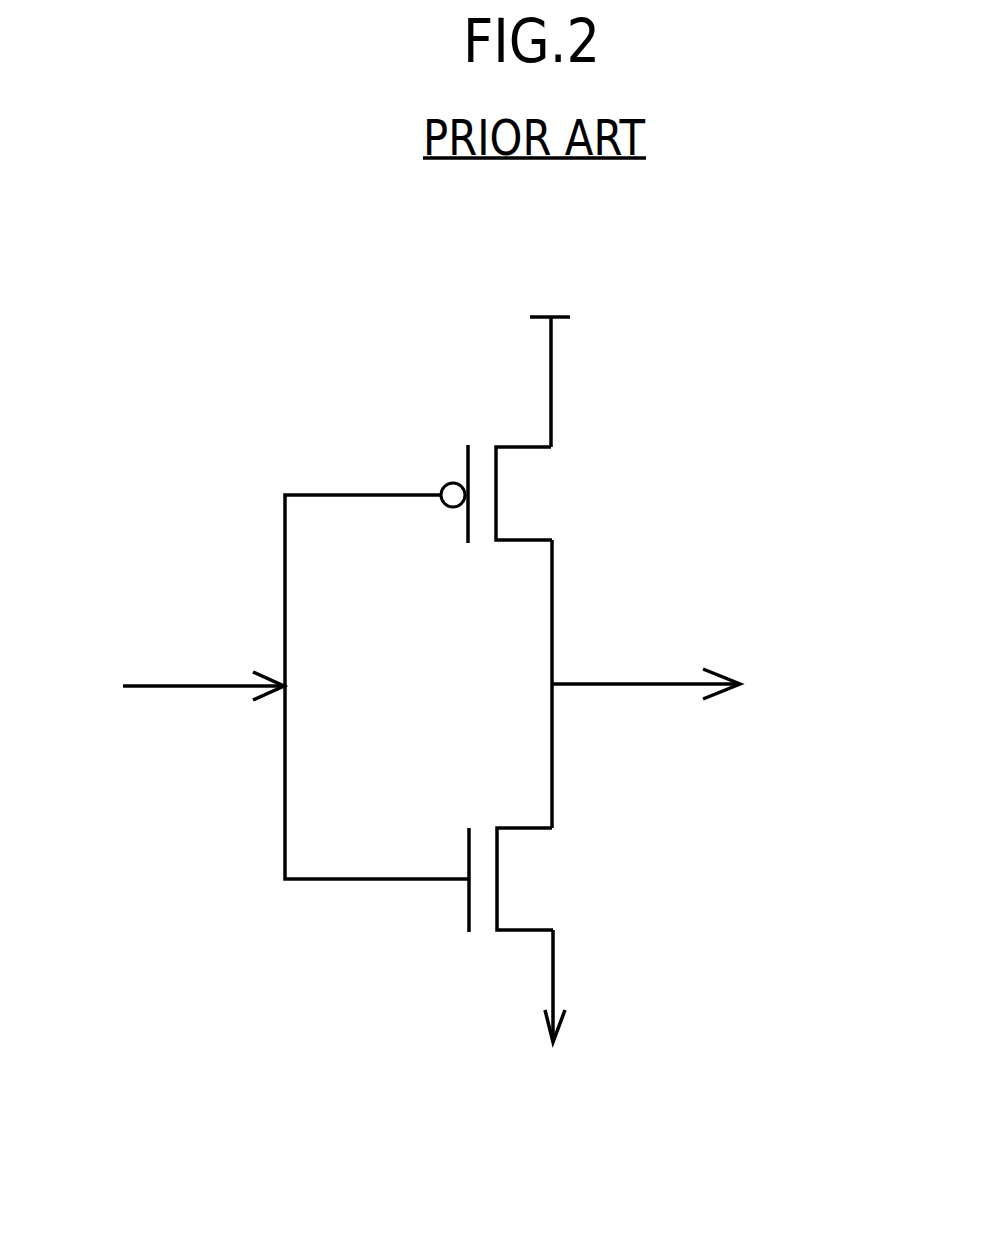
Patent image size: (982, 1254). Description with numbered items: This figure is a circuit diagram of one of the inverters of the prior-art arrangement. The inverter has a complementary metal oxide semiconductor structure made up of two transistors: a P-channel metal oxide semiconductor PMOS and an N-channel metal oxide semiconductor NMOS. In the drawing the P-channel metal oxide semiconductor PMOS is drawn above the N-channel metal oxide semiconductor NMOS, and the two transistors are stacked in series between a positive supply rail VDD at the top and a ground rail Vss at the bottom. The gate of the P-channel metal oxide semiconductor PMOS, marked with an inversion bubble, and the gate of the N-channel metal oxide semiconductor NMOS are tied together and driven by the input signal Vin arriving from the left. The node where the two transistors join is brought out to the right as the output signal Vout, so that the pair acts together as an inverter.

The P-channel metal oxide semiconductor PMOS is at (551, 494).
The N-channel metal oxide semiconductor NMOS is at (566, 880).
The supply voltage terminal VDD is at (543, 354).
The ground voltage terminal Vss is at (548, 1015).
The input signal Vin is at (267, 687).
The output signal Vout is at (687, 686).